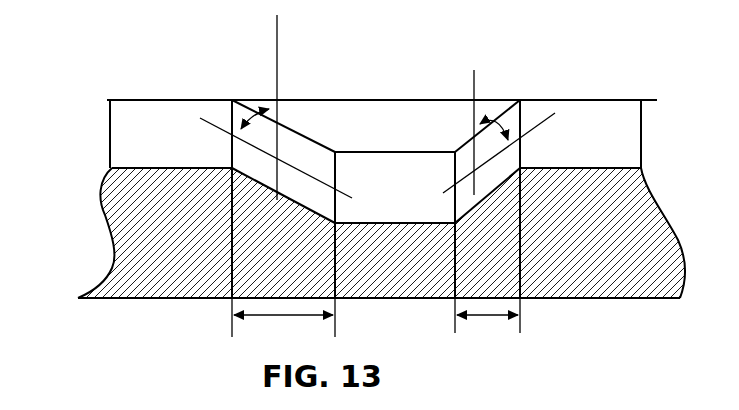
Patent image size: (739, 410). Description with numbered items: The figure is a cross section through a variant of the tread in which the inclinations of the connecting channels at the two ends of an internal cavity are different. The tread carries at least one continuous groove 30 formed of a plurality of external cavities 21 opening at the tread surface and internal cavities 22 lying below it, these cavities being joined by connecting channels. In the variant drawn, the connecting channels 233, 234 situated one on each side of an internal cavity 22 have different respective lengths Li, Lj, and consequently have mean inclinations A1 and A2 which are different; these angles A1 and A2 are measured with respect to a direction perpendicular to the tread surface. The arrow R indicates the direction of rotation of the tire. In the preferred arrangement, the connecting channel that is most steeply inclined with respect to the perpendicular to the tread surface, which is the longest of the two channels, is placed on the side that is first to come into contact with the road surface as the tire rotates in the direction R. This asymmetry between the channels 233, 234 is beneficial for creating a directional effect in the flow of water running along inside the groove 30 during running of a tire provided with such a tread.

The external cavity 21 is at (165, 127).
The internal cavity 22 is at (392, 182).
The lateral groove 30 is at (460, 125).
The connecting channel 233 is at (297, 152).
The connecting channel 234 is at (507, 120).
The mean inclination A1 is at (258, 112).
The mean inclination A2 is at (520, 100).
The length Li is at (283, 325).
The length Lj is at (487, 327).
The direction of rotation R is at (433, 42).